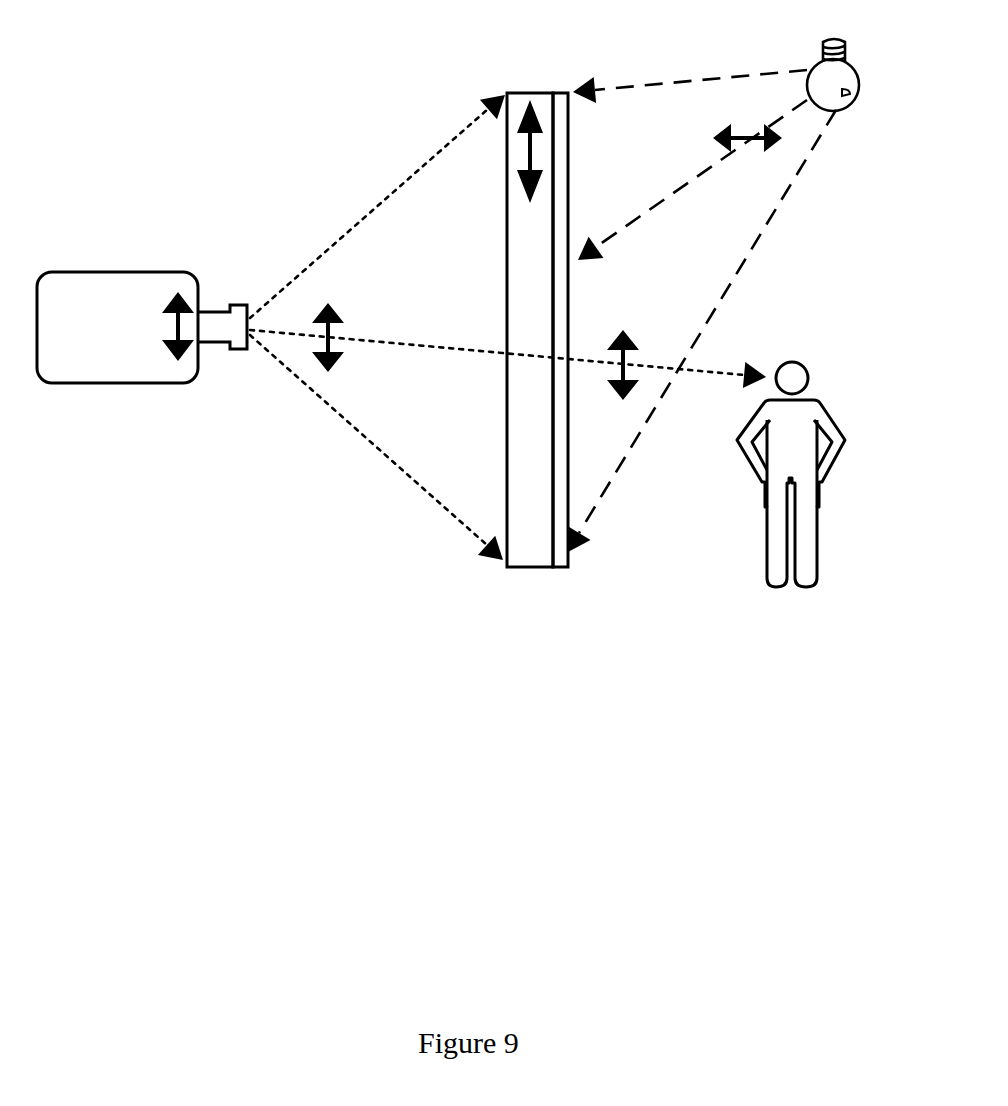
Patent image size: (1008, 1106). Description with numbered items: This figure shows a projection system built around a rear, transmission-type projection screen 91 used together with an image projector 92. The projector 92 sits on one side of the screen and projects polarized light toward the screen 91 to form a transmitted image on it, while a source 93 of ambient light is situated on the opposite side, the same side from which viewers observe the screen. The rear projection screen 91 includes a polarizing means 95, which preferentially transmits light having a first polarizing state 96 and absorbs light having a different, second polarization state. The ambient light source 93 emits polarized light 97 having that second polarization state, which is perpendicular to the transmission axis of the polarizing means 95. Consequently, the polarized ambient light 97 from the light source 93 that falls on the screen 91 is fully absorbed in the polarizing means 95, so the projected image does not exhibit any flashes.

The rear projection screen 91 is at (525, 544).
The image projector 92 is at (142, 327).
The ambient light source 93 is at (835, 100).
The polarizing means 95 is at (560, 556).
The first polarizing state 96 is at (332, 340).
The polarized ambient light 97 is at (748, 140).